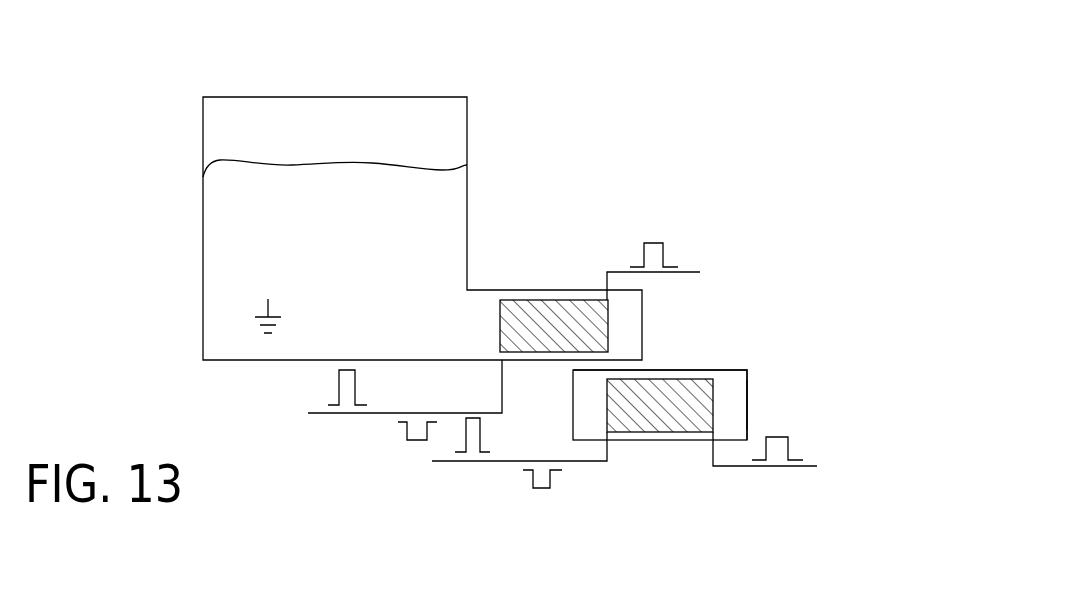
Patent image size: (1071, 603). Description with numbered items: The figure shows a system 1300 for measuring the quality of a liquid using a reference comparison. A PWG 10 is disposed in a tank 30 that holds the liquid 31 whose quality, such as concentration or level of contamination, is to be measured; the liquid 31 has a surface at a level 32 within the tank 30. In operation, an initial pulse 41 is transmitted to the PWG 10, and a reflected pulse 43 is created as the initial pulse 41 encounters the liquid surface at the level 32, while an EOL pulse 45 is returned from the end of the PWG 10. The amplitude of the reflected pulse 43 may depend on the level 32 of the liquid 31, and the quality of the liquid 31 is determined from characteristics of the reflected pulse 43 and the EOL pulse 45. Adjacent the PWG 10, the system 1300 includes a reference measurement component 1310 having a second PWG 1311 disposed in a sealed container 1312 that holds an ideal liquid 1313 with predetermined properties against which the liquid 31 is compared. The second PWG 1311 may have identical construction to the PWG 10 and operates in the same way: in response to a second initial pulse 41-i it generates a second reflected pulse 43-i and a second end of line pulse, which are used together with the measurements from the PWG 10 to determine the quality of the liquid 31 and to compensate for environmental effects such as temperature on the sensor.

The system 1300 is at (82, 65).
The tank 30 is at (474, 124).
The liquid 31 is at (290, 238).
The level 32 is at (455, 177).
The PWG 10 is at (556, 325).
The EOL pulse 45 is at (680, 248).
The initial pulse 41 is at (325, 387).
The reflected pulse 43 is at (396, 442).
The second initial pulse 41-i is at (455, 446).
The second reflected pulse 43-i is at (520, 481).
The reference measurement component 1310 is at (741, 343).
The second PWG 1311 is at (661, 402).
The sealed container 1312 is at (750, 404).
The ideal liquid 1313 is at (742, 374).